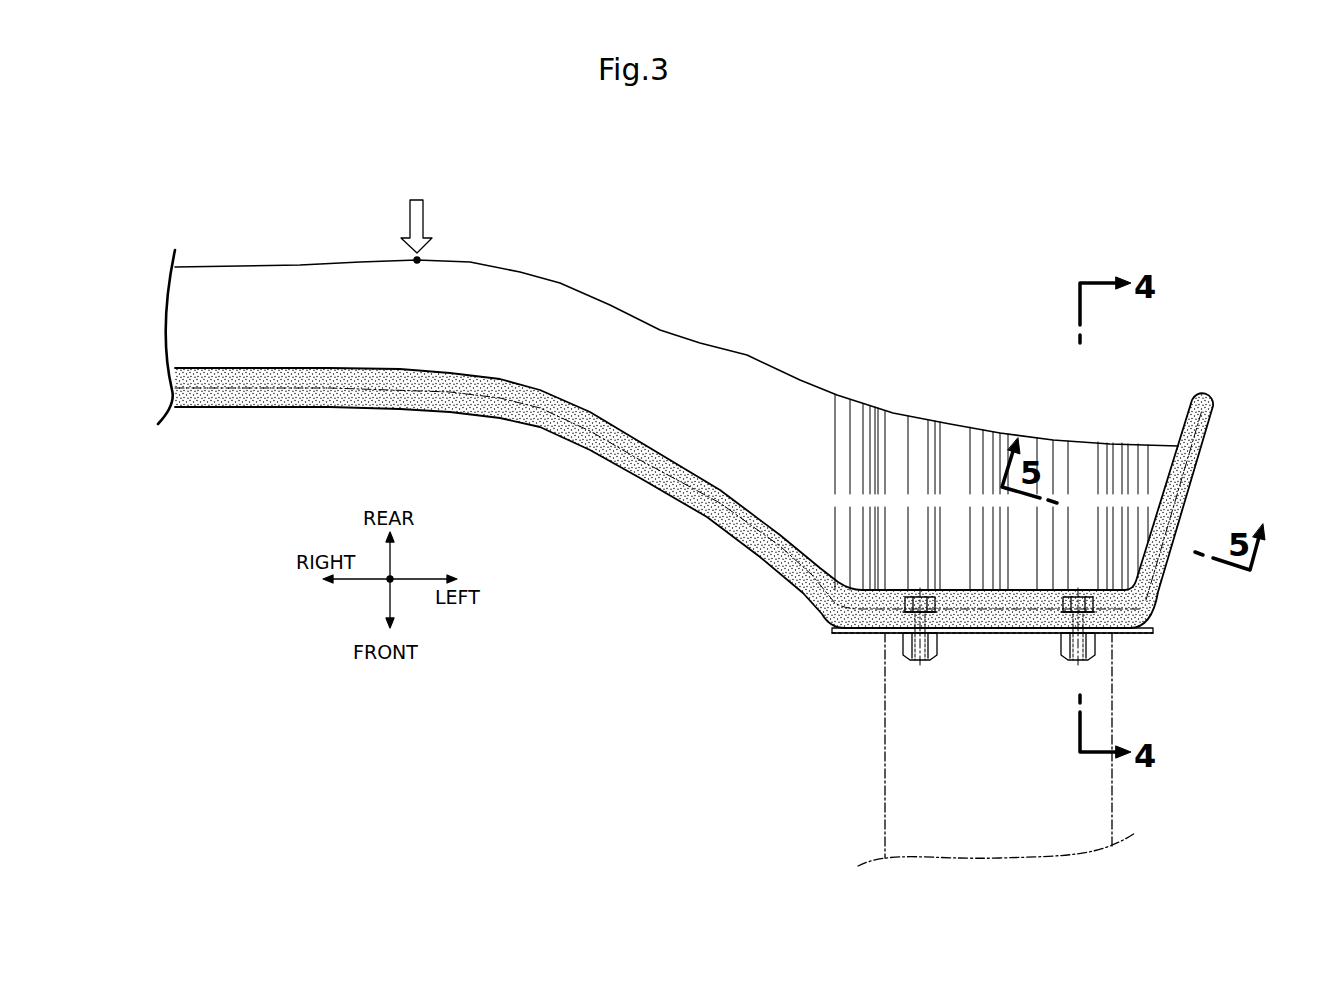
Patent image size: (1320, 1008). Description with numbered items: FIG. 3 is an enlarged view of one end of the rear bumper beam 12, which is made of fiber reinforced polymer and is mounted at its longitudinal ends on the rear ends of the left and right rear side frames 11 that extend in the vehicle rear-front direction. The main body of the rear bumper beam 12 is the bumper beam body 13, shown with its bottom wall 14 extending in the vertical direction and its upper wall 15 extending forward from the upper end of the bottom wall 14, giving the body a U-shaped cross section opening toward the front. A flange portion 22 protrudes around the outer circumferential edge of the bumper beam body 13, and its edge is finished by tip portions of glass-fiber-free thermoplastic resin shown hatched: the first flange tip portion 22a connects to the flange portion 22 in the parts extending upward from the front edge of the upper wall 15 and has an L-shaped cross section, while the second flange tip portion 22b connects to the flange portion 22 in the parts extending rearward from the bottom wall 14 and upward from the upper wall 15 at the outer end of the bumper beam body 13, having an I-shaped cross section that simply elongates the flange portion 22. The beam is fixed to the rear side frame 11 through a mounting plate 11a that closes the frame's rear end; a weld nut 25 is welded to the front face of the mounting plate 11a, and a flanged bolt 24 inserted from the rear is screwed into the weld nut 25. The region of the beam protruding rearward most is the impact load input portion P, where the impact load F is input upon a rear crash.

The rear side frame 11 is at (885, 772).
The mounting plate 11a is at (857, 634).
The rear bumper beam 12 is at (258, 437).
The bumper beam body 13 is at (676, 344).
The bottom wall 14 is at (490, 413).
The upper wall 15 is at (575, 307).
The flange portion 22 is at (729, 494).
The first flange tip portion 22a is at (698, 503).
The second flange tip portion 22b is at (1202, 401).
The flanged bolt 24 is at (999, 620).
The weld nut 25 is at (1057, 642).
The impact load F is at (416, 211).
The impact load input portion P is at (415, 259).